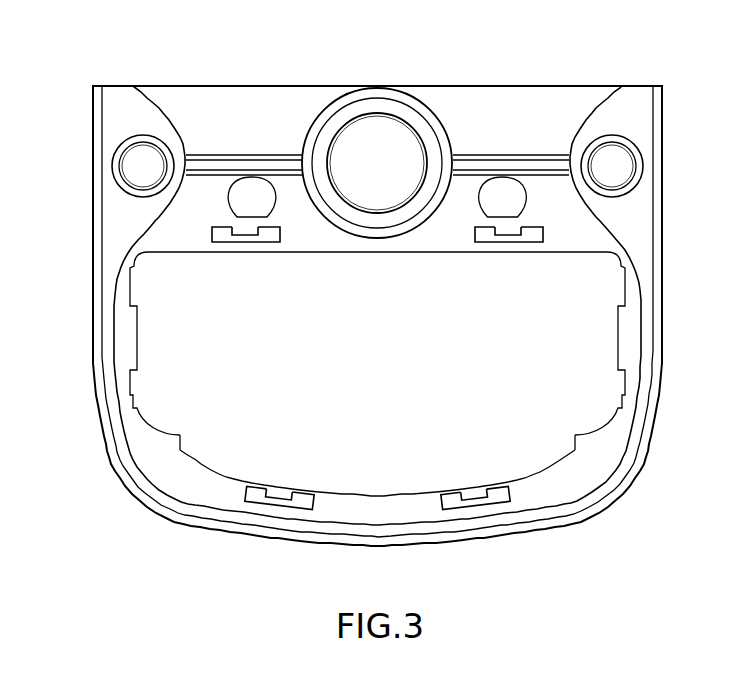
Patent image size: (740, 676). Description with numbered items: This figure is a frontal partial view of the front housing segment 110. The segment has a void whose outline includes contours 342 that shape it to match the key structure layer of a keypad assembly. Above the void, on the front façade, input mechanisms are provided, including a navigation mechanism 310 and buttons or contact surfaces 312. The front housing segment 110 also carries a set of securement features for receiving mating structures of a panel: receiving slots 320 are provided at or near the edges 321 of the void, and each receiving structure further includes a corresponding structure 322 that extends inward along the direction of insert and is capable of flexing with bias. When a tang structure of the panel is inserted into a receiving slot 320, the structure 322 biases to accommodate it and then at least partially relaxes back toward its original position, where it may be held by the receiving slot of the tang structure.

The front housing segment 110 is at (506, 72).
The navigation mechanism 310 is at (366, 142).
The buttons or contact surfaces 312 is at (139, 157).
The receiving slots 320 is at (204, 234).
The edges 321 is at (557, 254).
The corresponding structure 322 is at (252, 243).
The contours 342 is at (190, 505).